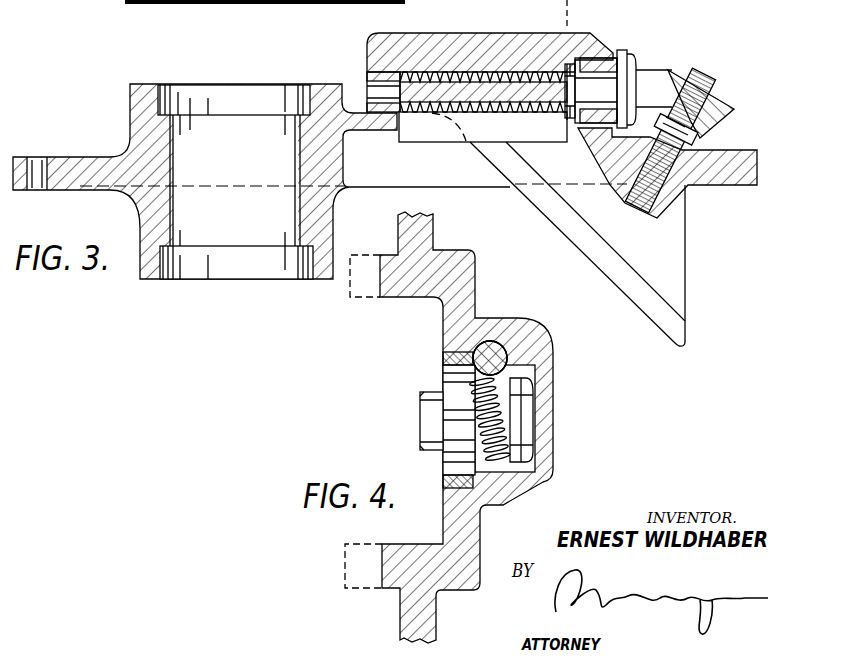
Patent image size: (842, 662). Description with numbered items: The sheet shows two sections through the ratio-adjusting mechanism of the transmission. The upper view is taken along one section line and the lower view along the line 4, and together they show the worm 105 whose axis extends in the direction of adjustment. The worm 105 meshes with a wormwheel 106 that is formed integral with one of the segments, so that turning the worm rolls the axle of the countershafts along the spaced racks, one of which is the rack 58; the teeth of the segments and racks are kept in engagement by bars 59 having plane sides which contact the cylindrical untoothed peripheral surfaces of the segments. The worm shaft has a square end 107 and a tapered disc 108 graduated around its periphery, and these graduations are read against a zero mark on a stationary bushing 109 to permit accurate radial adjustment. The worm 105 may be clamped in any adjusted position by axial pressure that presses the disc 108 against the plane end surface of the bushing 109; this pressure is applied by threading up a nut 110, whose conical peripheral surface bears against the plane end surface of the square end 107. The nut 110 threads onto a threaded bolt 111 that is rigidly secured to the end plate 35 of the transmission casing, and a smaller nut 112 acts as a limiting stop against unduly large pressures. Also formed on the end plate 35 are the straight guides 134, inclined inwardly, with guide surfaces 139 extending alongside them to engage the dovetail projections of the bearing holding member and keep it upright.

In FIG. 3, the worm 105 is at (470, 90).
In FIG. 4, the worm 105 is at (506, 350).
In FIG. 3, the section line 4- 4 is at (562, 14).
In FIG. 3, the stationary bushing 109 is at (619, 53).
In FIG. 3, the tapered disc 108 is at (633, 62).
In FIG. 3, the square end 107 is at (649, 80).
In FIG. 3, the threaded bolt 111 is at (704, 68).
In FIG. 3, the nut 110 is at (724, 102).
In FIG. 3, the smaller nut 112 is at (701, 136).
In FIG. 3, the end plate 35 is at (707, 176).
In FIG. 3, the straight guides 134 is at (590, 262).
In FIG. 3, the guide surfaces 139 is at (657, 313).
In FIG. 4, the bars 59 is at (443, 359).
In FIG. 4, the rack 58 is at (443, 483).
In FIG. 4, the wormwheel 106 is at (508, 427).